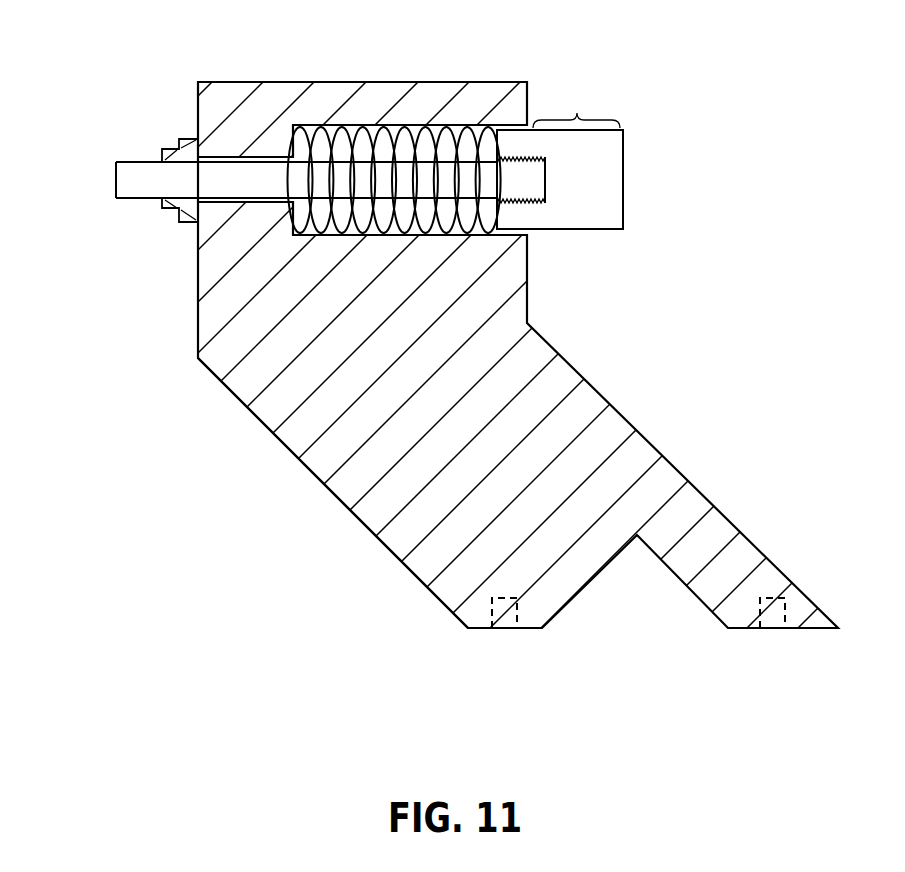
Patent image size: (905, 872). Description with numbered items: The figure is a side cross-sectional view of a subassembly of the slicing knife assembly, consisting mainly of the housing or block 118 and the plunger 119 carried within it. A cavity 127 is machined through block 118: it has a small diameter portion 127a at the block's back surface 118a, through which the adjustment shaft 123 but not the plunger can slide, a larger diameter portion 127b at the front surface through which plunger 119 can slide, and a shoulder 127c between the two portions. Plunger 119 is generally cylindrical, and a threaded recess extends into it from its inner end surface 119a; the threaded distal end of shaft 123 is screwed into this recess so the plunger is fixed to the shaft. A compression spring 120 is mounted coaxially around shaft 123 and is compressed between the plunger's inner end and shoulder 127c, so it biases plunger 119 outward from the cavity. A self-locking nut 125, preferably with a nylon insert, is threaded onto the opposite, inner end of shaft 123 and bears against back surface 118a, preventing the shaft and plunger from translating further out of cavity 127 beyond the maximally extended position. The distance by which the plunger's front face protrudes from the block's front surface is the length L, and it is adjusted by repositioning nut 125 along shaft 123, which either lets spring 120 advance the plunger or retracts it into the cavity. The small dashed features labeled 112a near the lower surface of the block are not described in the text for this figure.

The housing 118 is at (253, 82).
The back surface 118a is at (198, 318).
The plunger 119 is at (623, 204).
The inner end surface 119a is at (481, 236).
The compression spring 120 is at (348, 170).
The adjustment shaft 123 is at (392, 172).
The self-locking nut 125 is at (189, 138).
The cavity 127 is at (390, 244).
The small diameter portion 127a is at (258, 200).
The larger diameter portion 127b is at (458, 135).
The shoulder 127c is at (283, 203).
The engaging projections 112a is at (752, 628).
The length L is at (576, 103).